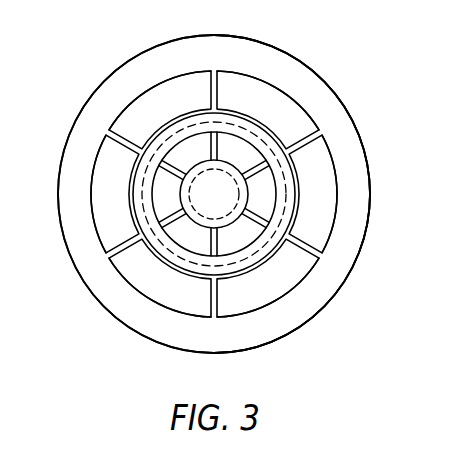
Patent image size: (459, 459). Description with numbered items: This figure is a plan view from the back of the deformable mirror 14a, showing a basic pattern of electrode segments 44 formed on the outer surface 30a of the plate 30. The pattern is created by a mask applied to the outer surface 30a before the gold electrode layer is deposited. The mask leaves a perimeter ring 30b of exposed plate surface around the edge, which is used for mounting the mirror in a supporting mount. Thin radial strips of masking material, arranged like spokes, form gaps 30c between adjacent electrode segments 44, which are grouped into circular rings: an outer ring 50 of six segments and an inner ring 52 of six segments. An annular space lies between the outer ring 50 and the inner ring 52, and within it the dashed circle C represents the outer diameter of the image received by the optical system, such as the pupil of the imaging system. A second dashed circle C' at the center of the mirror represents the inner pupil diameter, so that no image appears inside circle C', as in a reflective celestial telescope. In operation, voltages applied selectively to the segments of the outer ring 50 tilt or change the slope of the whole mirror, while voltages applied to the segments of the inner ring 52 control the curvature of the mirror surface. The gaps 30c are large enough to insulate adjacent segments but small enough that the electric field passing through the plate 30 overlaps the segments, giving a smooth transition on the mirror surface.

The deformable mirror 14a is at (268, 38).
The plate 30 is at (363, 140).
The outer surface 30a is at (347, 105).
The perimeter ring 30b is at (295, 310).
The gaps 30c is at (202, 244).
The electrode segments 44 is at (267, 93).
The outer ring 50 is at (337, 225).
The inner ring 52 is at (290, 167).
The circle C is at (242, 321).
The circle C' is at (176, 94).